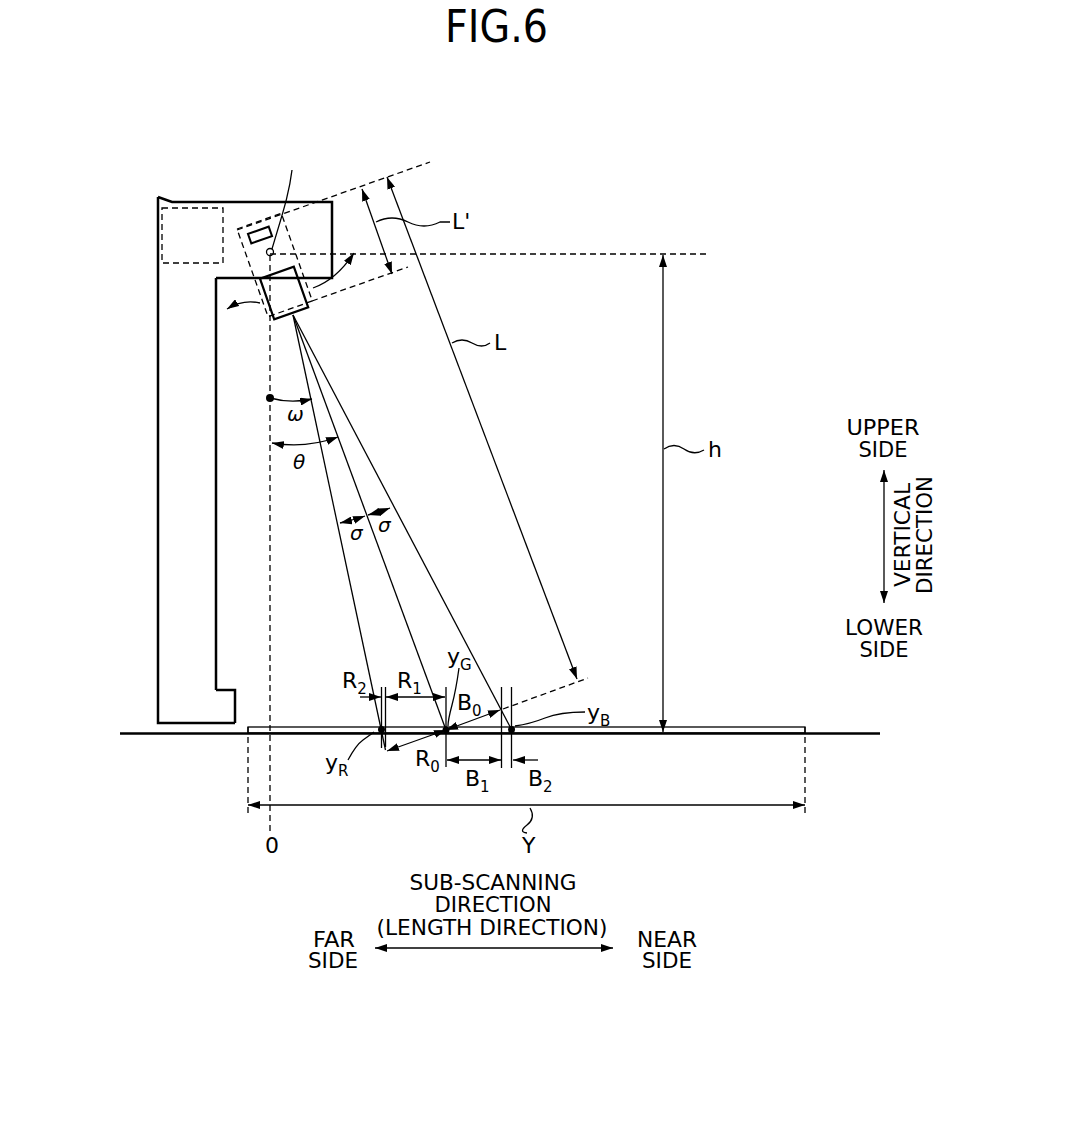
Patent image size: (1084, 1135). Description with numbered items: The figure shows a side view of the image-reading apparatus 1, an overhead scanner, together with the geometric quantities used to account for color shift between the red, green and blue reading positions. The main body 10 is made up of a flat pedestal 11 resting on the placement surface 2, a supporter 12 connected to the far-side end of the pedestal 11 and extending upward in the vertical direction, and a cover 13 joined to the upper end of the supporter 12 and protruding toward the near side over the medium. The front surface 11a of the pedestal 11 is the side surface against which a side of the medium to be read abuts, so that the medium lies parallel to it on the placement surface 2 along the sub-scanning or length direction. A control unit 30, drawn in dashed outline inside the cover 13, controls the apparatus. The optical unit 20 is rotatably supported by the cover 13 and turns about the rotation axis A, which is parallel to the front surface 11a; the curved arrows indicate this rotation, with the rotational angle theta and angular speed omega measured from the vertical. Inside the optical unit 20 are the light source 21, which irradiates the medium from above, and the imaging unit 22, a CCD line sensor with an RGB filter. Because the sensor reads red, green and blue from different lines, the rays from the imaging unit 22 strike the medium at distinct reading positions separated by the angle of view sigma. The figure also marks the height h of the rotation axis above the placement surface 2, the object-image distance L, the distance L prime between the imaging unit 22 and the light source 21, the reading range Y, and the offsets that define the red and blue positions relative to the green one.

The image-reading apparatus 1 is at (165, 160).
The main body 10 is at (102, 223).
The pedestal 11 is at (157, 697).
The front surface 11a is at (236, 698).
The supporter 12 is at (157, 268).
The cover 13 is at (193, 202).
The optical unit 20 is at (314, 313).
The light source 21 is at (295, 266).
The imaging unit 22 is at (266, 222).
The control unit 30 is at (203, 208).
The placement surface 2 is at (796, 727).